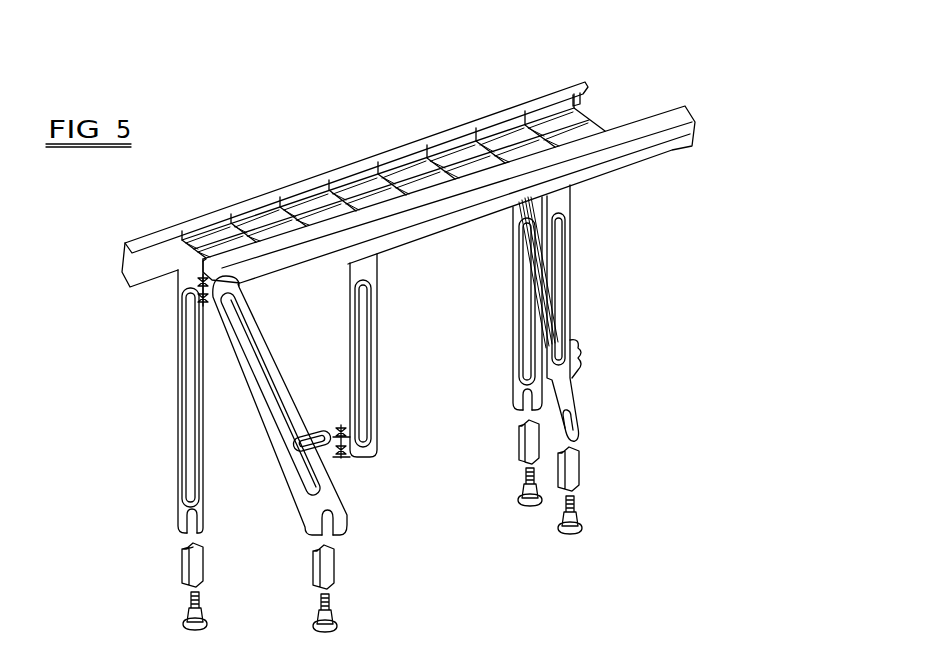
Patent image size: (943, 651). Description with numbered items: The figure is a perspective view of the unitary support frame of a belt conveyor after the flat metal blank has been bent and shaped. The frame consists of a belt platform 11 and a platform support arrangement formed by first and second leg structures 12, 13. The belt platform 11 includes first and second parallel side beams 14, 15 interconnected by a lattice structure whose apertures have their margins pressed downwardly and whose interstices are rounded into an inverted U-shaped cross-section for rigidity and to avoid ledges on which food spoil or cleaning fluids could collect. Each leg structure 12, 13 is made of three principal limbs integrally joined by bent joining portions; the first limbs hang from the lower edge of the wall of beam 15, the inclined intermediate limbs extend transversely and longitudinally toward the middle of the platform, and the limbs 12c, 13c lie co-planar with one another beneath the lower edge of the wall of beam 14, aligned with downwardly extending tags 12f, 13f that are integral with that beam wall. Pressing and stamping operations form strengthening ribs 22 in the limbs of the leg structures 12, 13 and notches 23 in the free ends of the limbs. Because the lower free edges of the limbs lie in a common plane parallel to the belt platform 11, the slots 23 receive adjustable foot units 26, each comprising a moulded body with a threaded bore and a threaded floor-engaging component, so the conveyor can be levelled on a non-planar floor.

The belt platform 11 is at (450, 152).
The first leg structure 12 is at (242, 386).
The tag of first leg structure 12f is at (373, 265).
The third limb of first leg structure 12c is at (372, 331).
The second leg structure 13 is at (629, 313).
The tag of second leg structure 13f is at (563, 200).
The third limb of second leg structure 13c is at (540, 293).
The first side beam 14 is at (647, 150).
The second side beam 15 is at (545, 82).
The strengthening rib 22 is at (190, 441).
The notch 23 is at (195, 518).
The adjustable foot unit 26 is at (192, 587).